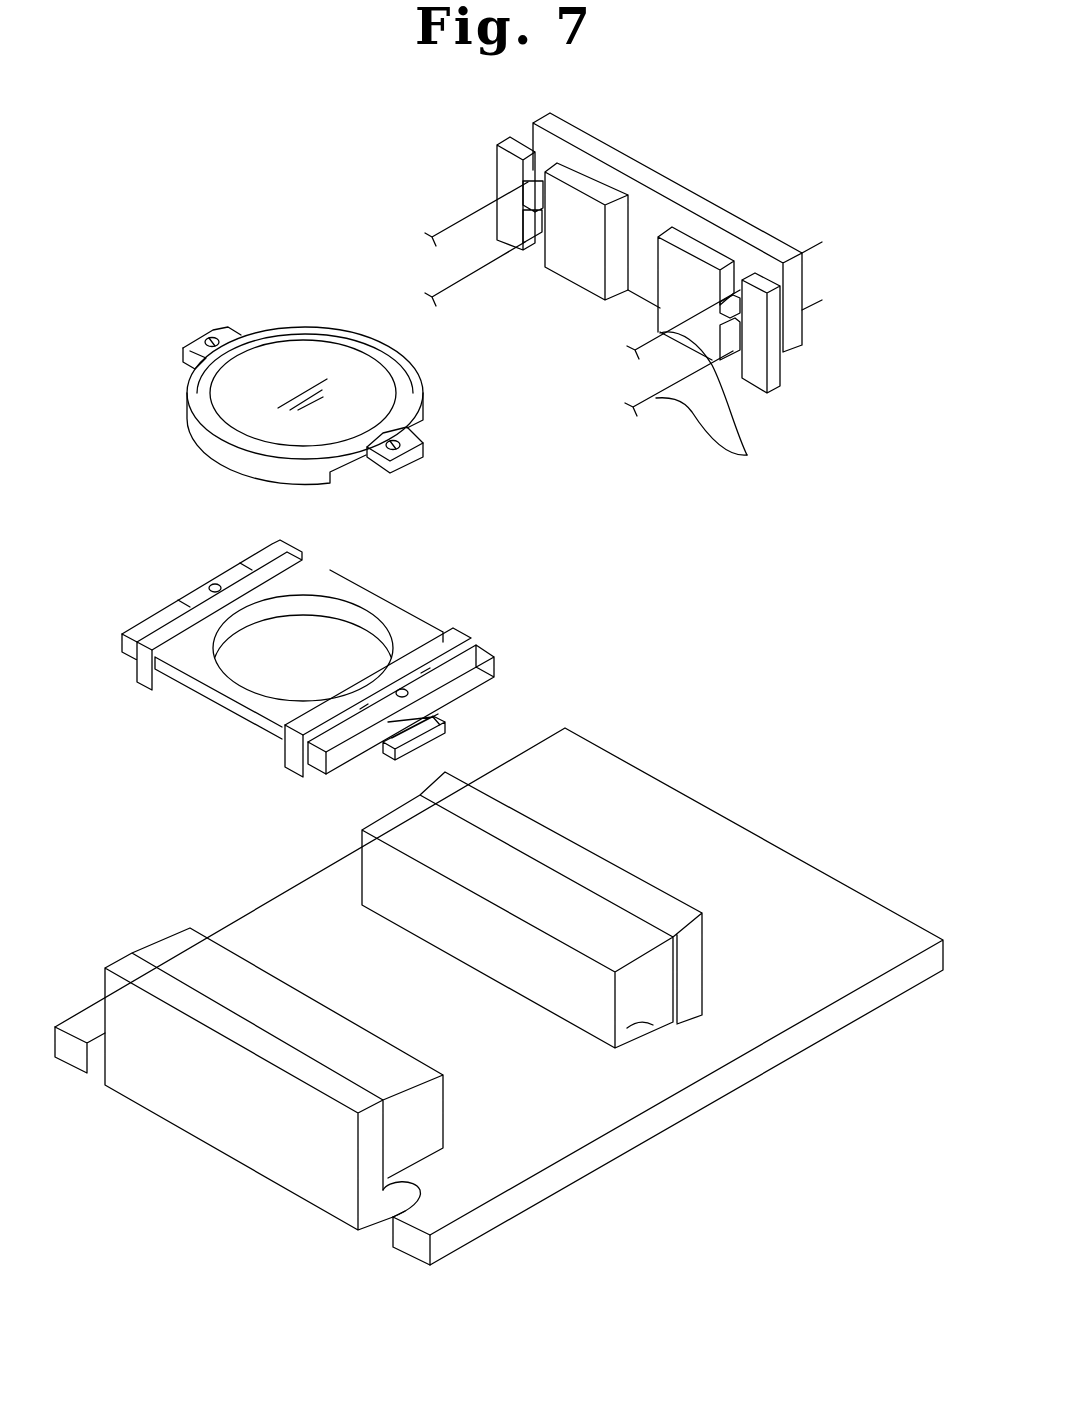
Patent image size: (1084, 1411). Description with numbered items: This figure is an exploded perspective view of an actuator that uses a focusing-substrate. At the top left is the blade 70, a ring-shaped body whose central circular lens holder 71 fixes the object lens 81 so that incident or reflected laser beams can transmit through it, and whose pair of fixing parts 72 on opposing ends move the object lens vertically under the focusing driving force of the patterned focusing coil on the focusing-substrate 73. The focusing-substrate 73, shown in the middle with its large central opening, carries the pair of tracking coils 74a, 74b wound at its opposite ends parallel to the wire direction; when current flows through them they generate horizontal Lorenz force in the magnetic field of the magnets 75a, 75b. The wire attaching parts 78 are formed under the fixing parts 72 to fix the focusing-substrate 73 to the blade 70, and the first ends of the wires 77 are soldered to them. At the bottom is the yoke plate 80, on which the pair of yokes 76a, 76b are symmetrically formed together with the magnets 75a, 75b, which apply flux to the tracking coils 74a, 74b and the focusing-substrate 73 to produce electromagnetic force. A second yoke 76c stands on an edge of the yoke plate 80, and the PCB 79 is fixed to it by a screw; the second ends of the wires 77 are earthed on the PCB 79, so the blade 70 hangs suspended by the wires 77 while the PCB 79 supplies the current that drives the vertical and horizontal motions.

The blade 70 is at (245, 326).
The lens holder 71 is at (200, 382).
The fixing parts 72 is at (213, 330).
The focusing-substrate 73 is at (402, 620).
The tracking coil 74a is at (458, 635).
The tracking coil 74b is at (163, 633).
The magnet 75a is at (652, 1025).
The magnet 75b is at (428, 1155).
The yoke 76a is at (685, 1022).
The yoke 76b is at (314, 1186).
The second yoke 76c is at (790, 350).
The wires 77 is at (718, 408).
The wire attaching parts 78 is at (428, 678).
The PCB 79 is at (757, 238).
The yoke plate 80 is at (510, 1187).
The object lens 81 is at (282, 360).